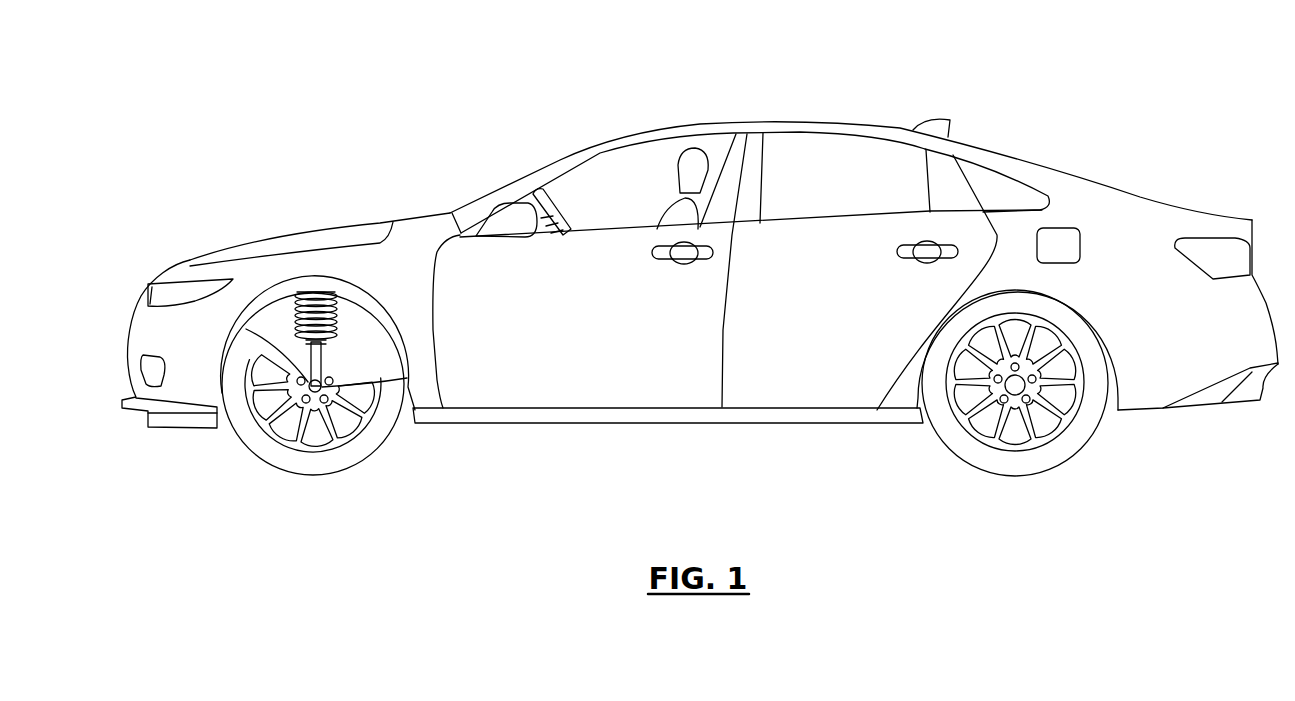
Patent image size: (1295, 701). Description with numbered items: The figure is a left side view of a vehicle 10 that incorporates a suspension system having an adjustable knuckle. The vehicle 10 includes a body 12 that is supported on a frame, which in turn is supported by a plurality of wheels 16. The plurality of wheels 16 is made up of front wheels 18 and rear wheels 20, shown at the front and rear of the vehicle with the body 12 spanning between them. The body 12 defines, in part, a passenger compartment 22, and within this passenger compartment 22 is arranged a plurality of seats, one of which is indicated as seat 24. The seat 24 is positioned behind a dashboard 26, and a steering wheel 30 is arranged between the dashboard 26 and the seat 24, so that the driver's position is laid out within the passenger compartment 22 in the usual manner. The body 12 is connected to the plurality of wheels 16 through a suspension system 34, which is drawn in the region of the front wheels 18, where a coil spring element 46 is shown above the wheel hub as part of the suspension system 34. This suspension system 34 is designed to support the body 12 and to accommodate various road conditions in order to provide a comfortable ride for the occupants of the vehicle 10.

The vehicle 10 is at (118, 82).
The body 12 is at (597, 133).
The plurality of wheels 16 is at (414, 478).
The front wheels 18 is at (273, 463).
The rear wheels 20 is at (1048, 460).
The passenger compartment 22 is at (586, 187).
The seat 24 is at (693, 157).
The dashboard 26 is at (519, 201).
The steering wheel 30 is at (563, 235).
The suspension system 34 is at (358, 337).
The spring 46 is at (292, 300).